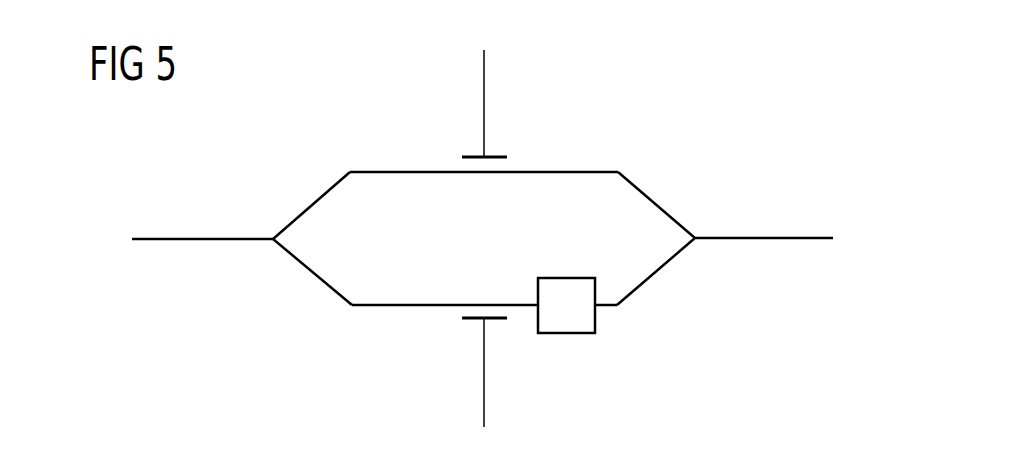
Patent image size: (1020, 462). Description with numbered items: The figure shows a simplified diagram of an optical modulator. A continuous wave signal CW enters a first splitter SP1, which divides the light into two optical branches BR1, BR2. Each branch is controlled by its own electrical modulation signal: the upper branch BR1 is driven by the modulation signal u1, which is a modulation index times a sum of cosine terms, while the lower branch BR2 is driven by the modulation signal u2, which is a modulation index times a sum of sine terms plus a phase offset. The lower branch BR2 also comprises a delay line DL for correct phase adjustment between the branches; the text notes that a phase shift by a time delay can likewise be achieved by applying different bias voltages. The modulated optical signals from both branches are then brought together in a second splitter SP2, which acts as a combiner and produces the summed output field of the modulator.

The continuous wave signal CW is at (216, 228).
The first splitter SP1 is at (275, 240).
The second splitter SP2 is at (693, 238).
The upper branch BR1 is at (420, 172).
The lower branch BR2 is at (420, 305).
The delay line DL is at (566, 305).
The electrical modulation signal u1 is at (495, 60).
The electrical modulation signal u2 is at (495, 378).